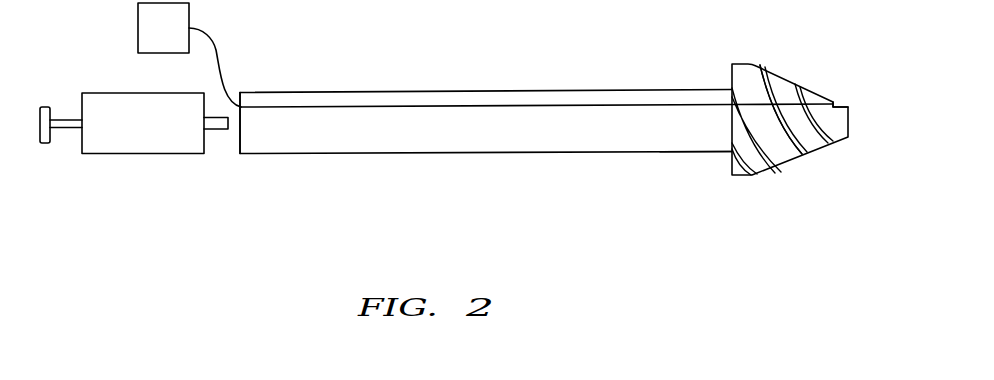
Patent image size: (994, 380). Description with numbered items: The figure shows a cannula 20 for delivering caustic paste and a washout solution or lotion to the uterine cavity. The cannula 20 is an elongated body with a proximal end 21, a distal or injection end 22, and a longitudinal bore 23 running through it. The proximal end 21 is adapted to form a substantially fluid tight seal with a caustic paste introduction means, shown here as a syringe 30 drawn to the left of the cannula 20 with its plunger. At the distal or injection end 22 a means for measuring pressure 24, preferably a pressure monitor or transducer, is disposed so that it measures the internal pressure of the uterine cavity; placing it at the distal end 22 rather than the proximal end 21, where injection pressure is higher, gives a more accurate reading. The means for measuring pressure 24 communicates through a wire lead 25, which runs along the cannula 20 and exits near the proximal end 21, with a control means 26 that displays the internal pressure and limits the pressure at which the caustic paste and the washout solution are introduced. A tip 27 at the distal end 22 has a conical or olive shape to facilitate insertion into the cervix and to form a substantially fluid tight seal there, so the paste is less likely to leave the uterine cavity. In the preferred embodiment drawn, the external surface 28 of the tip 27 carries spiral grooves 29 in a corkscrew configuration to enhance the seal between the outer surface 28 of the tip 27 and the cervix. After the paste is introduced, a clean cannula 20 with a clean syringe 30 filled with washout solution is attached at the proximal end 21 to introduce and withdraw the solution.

The cannula 20 is at (537, 124).
The proximal end 21 is at (245, 154).
The distal or injection end 22 is at (710, 152).
The longitudinal bore 23 is at (411, 148).
The means for measuring pressure 24 is at (838, 101).
The wire lead 25 is at (216, 48).
The control means 26 is at (176, 40).
The tip 27 is at (814, 151).
The external surface 28 is at (762, 158).
The spiral grooves 29 is at (762, 70).
The syringe 30 is at (156, 138).